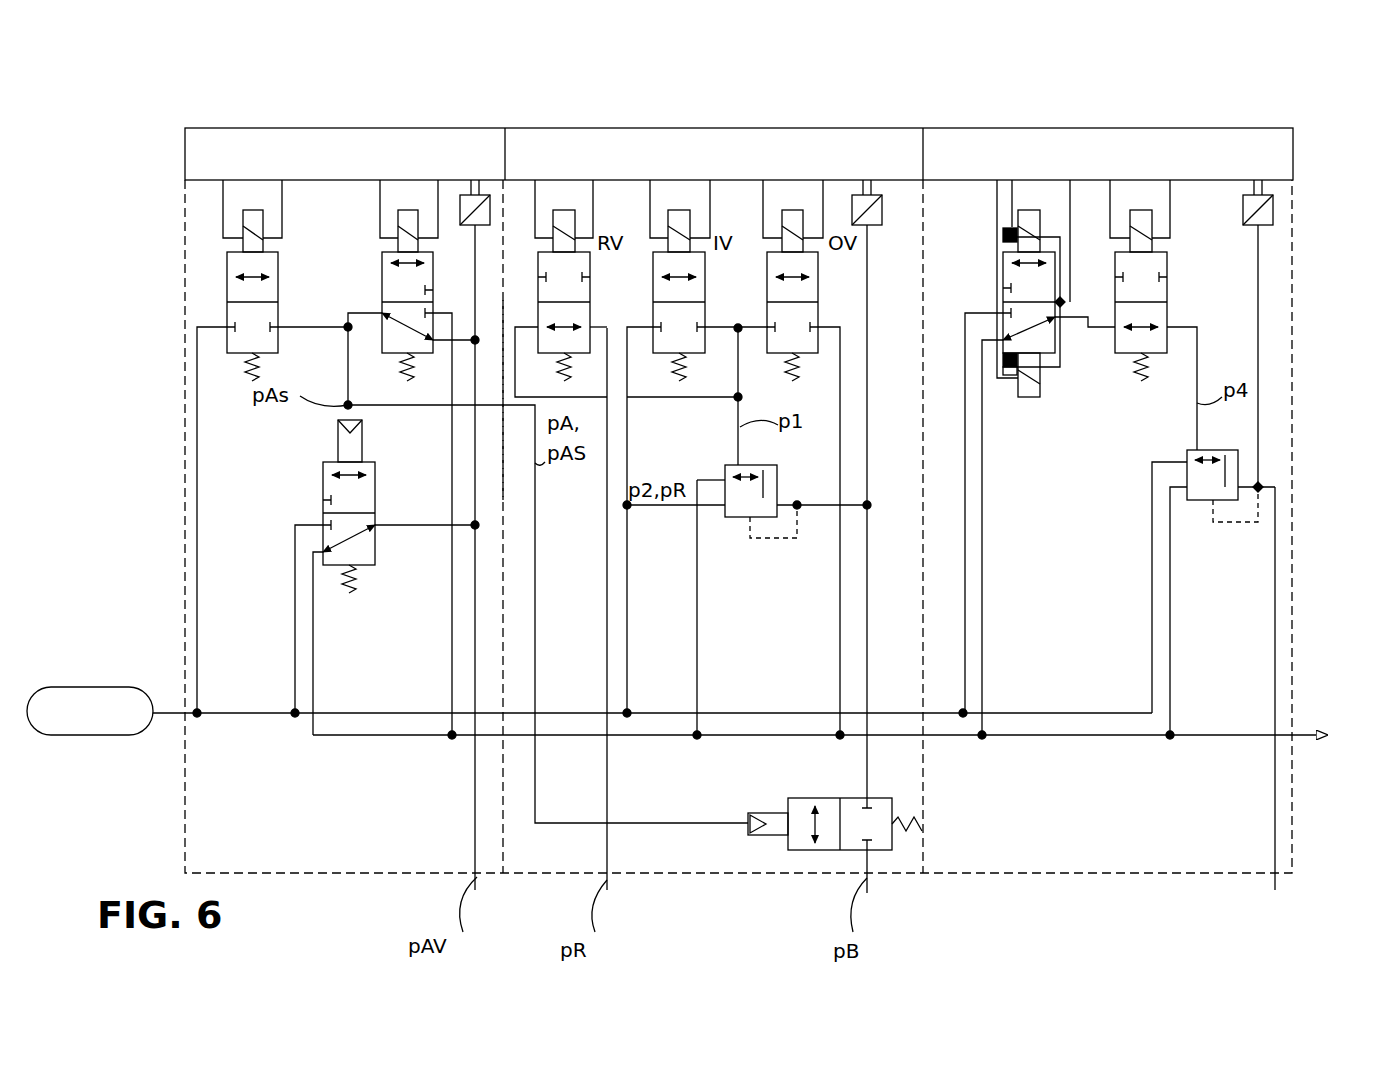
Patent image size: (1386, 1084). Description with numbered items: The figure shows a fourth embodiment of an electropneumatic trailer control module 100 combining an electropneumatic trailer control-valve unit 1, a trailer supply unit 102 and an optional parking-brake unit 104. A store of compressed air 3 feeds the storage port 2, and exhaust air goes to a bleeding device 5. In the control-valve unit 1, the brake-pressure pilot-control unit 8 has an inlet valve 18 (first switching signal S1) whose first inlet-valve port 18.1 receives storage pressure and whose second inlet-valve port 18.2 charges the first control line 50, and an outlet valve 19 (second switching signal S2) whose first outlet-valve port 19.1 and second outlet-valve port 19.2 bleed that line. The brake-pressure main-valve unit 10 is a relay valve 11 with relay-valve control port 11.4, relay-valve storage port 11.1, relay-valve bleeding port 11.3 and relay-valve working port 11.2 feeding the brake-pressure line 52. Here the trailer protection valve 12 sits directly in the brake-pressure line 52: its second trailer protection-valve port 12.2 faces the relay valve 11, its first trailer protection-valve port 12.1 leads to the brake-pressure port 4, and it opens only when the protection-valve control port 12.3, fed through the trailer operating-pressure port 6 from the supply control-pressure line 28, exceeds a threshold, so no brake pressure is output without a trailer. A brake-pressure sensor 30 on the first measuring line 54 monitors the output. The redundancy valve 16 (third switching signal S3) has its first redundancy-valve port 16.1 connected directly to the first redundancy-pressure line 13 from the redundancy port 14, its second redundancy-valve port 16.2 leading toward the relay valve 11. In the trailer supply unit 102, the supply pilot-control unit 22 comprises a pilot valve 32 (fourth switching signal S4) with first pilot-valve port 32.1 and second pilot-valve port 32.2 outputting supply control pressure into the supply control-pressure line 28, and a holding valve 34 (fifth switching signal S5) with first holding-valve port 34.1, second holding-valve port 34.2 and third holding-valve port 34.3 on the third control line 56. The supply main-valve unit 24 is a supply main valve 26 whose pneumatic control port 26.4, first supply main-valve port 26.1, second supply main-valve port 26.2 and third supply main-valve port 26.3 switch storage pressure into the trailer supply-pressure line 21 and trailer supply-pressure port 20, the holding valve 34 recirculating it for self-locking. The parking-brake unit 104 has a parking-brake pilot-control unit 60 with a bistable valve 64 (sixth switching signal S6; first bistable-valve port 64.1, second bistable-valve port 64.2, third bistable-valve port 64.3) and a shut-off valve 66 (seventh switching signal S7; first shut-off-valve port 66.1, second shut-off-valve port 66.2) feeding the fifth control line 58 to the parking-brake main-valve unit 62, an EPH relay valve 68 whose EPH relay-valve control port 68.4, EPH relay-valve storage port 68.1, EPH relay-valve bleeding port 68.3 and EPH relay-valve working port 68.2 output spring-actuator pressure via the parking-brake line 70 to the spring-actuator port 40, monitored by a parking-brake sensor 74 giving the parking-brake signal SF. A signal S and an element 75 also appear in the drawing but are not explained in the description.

The electropneumatic trailer control module 100 is at (195, 125).
The trailer supply unit 102 is at (327, 125).
The parking-brake unit 104 is at (997, 125).
The electropneumatic trailer control-valve unit 1 is at (555, 120).
The storage port 2 is at (185, 711).
The store of compressed air 3 is at (77, 687).
The brake-pressure port 4 is at (868, 875).
The bleeding device 5 is at (1334, 742).
The trailer operating-pressure port 6 is at (505, 408).
The brake-pressure pilot-control unit 8 is at (520, 200).
The brake-pressure main-valve unit 10 is at (822, 425).
The relay valve 11 is at (775, 465).
The relay-valve storage port 11.1 is at (720, 517).
The relay-valve working port 11.2 is at (778, 503).
The relay-valve bleeding port 11.3 is at (724, 479).
The relay-valve control port 11.4 is at (725, 475).
The trailer protection valve 12 is at (805, 810).
The first trailer protection-valve port 12.1 is at (868, 850).
The second trailer protection-valve port 12.2 is at (868, 798).
The protection-valve control port 12.3 is at (748, 828).
The first redundancy-pressure line 13 is at (605, 625).
The redundancy port 14 is at (607, 880).
The redundancy valve 16 is at (538, 277).
The first redundancy-valve port 16.1 is at (537, 327).
The second redundancy-valve port 16.2 is at (592, 327).
The inlet valve 18 is at (655, 252).
The first inlet-valve port 18.1 is at (653, 327).
The second inlet-valve port 18.2 is at (706, 327).
The outlet valve 19 is at (818, 293).
The first outlet-valve port 19.1 is at (768, 327).
The second outlet-valve port 19.2 is at (830, 328).
The trailer supply-pressure port 20 is at (480, 877).
The trailer supply-pressure line 21 is at (475, 818).
The supply pilot-control unit 22 is at (205, 262).
The supply main-valve unit 24 is at (265, 473).
The supply main valve 26 is at (323, 463).
The first supply main-valve port 26.1 is at (323, 525).
The second supply main-valve port 26.2 is at (377, 524).
The third supply main-valve port 26.3 is at (323, 555).
The pneumatic control port 26.4 is at (362, 421).
The supply control-pressure line 28 is at (347, 373).
The brake-pressure sensor 30 is at (887, 210).
The pilot valve 32 is at (280, 265).
The first pilot-valve port 32.1 is at (227, 325).
The second pilot-valve port 32.2 is at (280, 327).
The holding valve 34 is at (385, 253).
The first holding-valve port 34.1 is at (436, 317).
The second holding-valve port 34.2 is at (383, 316).
The third holding-valve port 34.3 is at (435, 344).
The spring-actuator port 40 is at (1278, 875).
The first control line 50 is at (738, 362).
The brake-pressure line 52 is at (867, 653).
The first measuring line 54 is at (867, 475).
The third control line 56 is at (475, 460).
The fifth control line 58 is at (1198, 352).
The parking-brake pilot-control unit 60 is at (1212, 252).
The parking-brake main-valve unit 62 is at (1237, 367).
The bistable valve 64 is at (1052, 370).
The first bistable-valve port 64.1 is at (1000, 313).
The second bistable-valve port 64.2 is at (1062, 300).
The third bistable-valve port 64.3 is at (1003, 345).
The shut-off valve 66 is at (1167, 252).
The first shut-off-valve port 66.1 is at (1134, 380).
The second shut-off-valve port 66.2 is at (1168, 327).
The EPH relay valve 68 is at (1187, 450).
The EPH relay-valve storage port 68.1 is at (1186, 462).
The EPH relay-valve working port 68.2 is at (1248, 481).
The EPH relay-valve bleeding port 68.3 is at (1180, 493).
The EPH relay-valve control port 68.4 is at (1233, 430).
The parking-brake line 70 is at (1277, 635).
The parking-brake sensor 74 is at (1273, 207).
The latching element 75 is at (1045, 378).
The pressure sensor signal S is at (470, 188).
The first switching signal S1 is at (678, 197).
The second switching signal S2 is at (812, 197).
The third switching signal S3 is at (583, 195).
The fourth switching signal S4 is at (267, 197).
The fifth switching signal S5 is at (430, 195).
The bistable valve control signal S6 is at (1045, 195).
The spring brake valve control signal S7 is at (1130, 195).
The parking-brake signal SF is at (1258, 185).